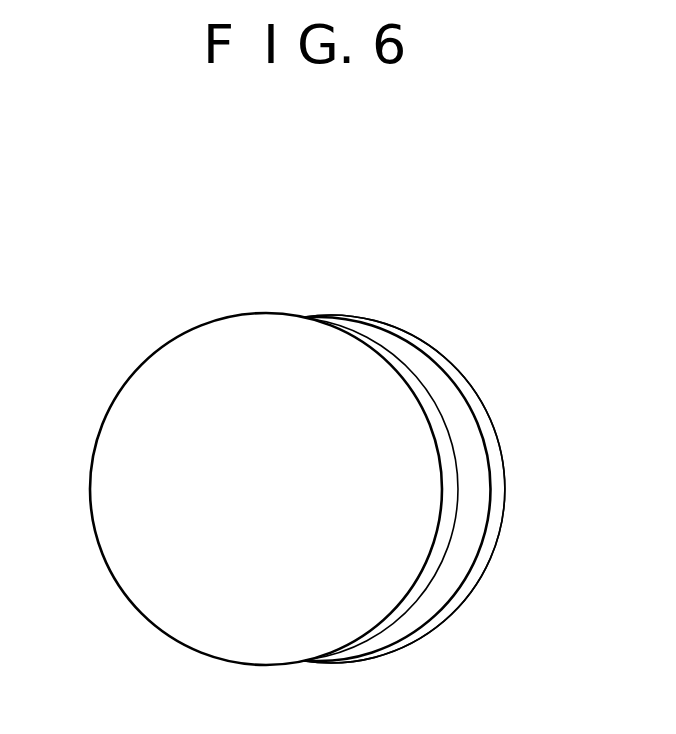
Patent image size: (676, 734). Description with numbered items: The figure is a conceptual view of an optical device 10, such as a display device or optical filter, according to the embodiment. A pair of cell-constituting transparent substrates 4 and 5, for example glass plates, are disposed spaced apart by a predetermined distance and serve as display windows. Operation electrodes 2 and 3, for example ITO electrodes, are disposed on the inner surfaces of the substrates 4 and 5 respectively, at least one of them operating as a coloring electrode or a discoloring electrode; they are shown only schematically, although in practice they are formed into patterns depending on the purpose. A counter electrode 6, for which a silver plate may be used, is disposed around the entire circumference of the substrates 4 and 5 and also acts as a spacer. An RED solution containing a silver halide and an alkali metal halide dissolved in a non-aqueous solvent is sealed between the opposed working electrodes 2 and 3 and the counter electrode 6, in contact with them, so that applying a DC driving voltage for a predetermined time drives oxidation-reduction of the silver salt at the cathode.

The operation electrode 2 is at (242, 314).
The operation electrode 3 is at (352, 316).
The transparent substrate 4 is at (105, 426).
The transparent substrate 5 is at (497, 514).
The counter electrode 6 is at (457, 425).
The optical device 10 is at (494, 404).